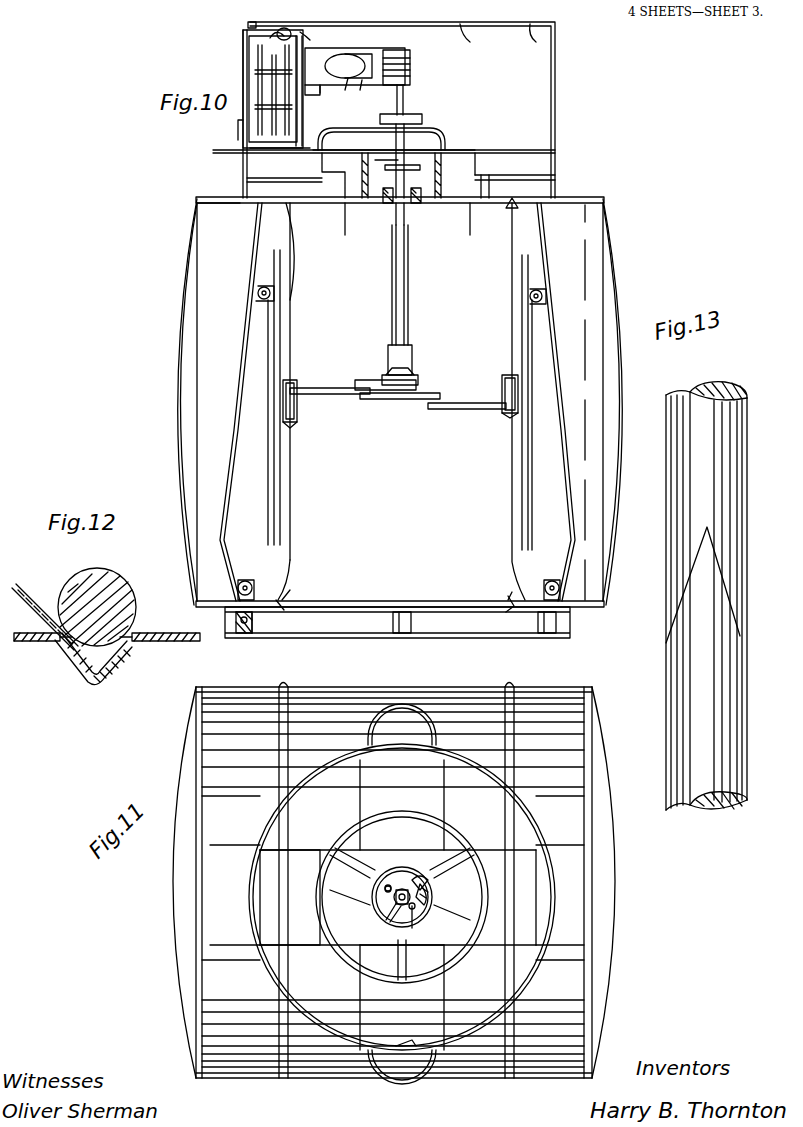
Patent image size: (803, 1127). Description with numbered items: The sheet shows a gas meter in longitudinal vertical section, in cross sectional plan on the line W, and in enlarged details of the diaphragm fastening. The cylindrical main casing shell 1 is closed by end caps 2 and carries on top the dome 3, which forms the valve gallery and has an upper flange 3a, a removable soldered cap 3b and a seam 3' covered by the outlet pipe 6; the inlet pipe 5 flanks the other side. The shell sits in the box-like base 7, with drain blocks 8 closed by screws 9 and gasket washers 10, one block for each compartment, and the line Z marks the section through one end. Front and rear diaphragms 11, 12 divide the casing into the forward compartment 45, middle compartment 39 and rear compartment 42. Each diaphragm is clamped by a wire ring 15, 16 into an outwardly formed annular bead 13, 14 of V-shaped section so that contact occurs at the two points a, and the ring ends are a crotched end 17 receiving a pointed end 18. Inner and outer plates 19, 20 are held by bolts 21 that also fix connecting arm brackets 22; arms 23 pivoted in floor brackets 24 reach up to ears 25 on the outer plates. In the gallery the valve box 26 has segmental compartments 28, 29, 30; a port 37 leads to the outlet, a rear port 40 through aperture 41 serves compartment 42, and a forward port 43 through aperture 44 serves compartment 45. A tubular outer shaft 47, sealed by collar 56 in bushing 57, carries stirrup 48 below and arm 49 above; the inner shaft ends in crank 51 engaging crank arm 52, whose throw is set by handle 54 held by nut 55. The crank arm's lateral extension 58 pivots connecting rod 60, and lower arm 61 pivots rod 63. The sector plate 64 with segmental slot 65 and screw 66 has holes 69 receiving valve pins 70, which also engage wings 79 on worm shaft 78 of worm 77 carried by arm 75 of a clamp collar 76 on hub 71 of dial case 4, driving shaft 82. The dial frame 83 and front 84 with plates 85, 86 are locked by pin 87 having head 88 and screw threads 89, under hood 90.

In FIG. 10, the cylindrical main casing shell 1 is at (215, 198).
In FIG. 11, the cylindrical main casing shell 1 is at (540, 716).
In FIG. 10, the end caps 2 is at (176, 404).
In FIG. 11, the end caps 2 is at (185, 788).
In FIG. 10, the dome 3 is at (413, 110).
In FIG. 11, the dome 3 is at (402, 897).
In FIG. 10, the upper flange of the dome 3a is at (538, 42).
In FIG. 10, the cap 3b is at (470, 40).
In FIG. 11, the seam of the dome 3' is at (430, 1025).
In FIG. 10, the dial case 4 is at (325, 66).
In FIG. 11, the inlet pipe 5 is at (408, 704).
In FIG. 11, the outlet pipe 6 is at (406, 1086).
In FIG. 10, the base 7 is at (262, 639).
In FIG. 10, the drain blocks 8 is at (256, 620).
In FIG. 10, the screws 9 is at (242, 624).
In FIG. 10, the gasket washers 10 is at (236, 620).
In FIG. 10, the front diaphragm 11 is at (291, 518).
In FIG. 12, the front diaphragm 11 is at (36, 602).
In FIG. 10, the rear diaphragm 12 is at (512, 478).
In FIG. 10, the annular bead 13 is at (284, 610).
In FIG. 11, the annular bead 13 is at (292, 684).
In FIG. 12, the annular bead 13 is at (110, 672).
In FIG. 10, the annular bead 14 is at (508, 610).
In FIG. 11, the annular bead 14 is at (510, 684).
In FIG. 10, the wire ring 15 is at (286, 592).
In FIG. 12, the wire ring 15 is at (122, 606).
In FIG. 10, the wire ring 16 is at (514, 592).
In FIG. 13, the crotched end of the ring 17 is at (714, 524).
In FIG. 13, the pointed end of the ring 18 is at (720, 655).
In FIG. 10, the inner plate 19 is at (284, 340).
In FIG. 10, the outer plate 20 is at (270, 352).
In FIG. 10, the bolts 21 is at (282, 398).
In FIG. 10, the connecting arm brackets 22 is at (296, 426).
In FIG. 10, the arms 23 is at (234, 450).
In FIG. 10, the brackets 24 is at (246, 580).
In FIG. 10, the ears 25 is at (262, 286).
In FIG. 10, the valve box 26 is at (486, 153).
In FIG. 11, the valve box 26 is at (402, 830).
In FIG. 11, the segmental compartment 28 is at (386, 838).
In FIG. 10, the segmental compartment 29 is at (456, 204).
In FIG. 11, the segmental compartment 29 is at (452, 911).
In FIG. 10, the segmental compartment 30 is at (350, 203).
In FIG. 11, the segmental compartment 30 is at (350, 913).
In FIG. 11, the port 37 is at (372, 1000).
In FIG. 10, the middle compartment 39 is at (416, 285).
In FIG. 10, the rear port 40 is at (506, 178).
In FIG. 11, the rear port 40 is at (540, 876).
In FIG. 10, the aperture 41 is at (520, 206).
In FIG. 10, the rear compartment 42 is at (570, 225).
In FIG. 10, the forward port 43 is at (275, 176).
In FIG. 11, the forward port 43 is at (290, 897).
In FIG. 10, the aperture 44 is at (262, 203).
In FIG. 10, the forward compartment 45 is at (253, 251).
In FIG. 10, the tubular outer shaft 47 is at (409, 330).
In FIG. 10, the stirrup 48 is at (412, 356).
In FIG. 10, the arm 49 is at (414, 161).
In FIG. 10, the crank 51 is at (418, 378).
In FIG. 10, the crank arm 52 is at (390, 372).
In FIG. 10, the handle 54 is at (383, 172).
In FIG. 11, the handle 54 is at (386, 916).
In FIG. 11, the nut 55 is at (386, 900).
In FIG. 10, the collar 56 is at (395, 208).
In FIG. 10, the bushing 57 is at (412, 203).
In FIG. 10, the lateral extension 58 is at (364, 380).
In FIG. 10, the connecting rod 60 is at (330, 397).
In FIG. 10, the lower arm 61 is at (384, 400).
In FIG. 10, the connecting rod 63 is at (458, 410).
In FIG. 10, the sector plate 64 is at (421, 167).
In FIG. 11, the sector plate 64 is at (404, 868).
In FIG. 11, the segmental slot 65 is at (424, 886).
In FIG. 11, the screw 66 is at (416, 880).
In FIG. 11, the holes 69 is at (388, 886).
In FIG. 10, the pins 70 is at (395, 138).
In FIG. 10, the hub 71 is at (326, 98).
In FIG. 10, the arm 75 is at (366, 95).
In FIG. 10, the clamp collar 76 is at (352, 66).
In FIG. 10, the worm 77 is at (410, 66).
In FIG. 10, the worm shaft 78 is at (404, 98).
In FIG. 10, the wings 79 is at (380, 118).
In FIG. 10, the shaft 82 is at (346, 94).
In FIG. 10, the dial frame 83 is at (282, 52).
In FIG. 10, the front 84 is at (248, 146).
In FIG. 10, the upper plate 85 is at (276, 36).
In FIG. 10, the lower plate 86 is at (276, 152).
In FIG. 10, the pin 87 is at (304, 50).
In FIG. 10, the head 88 is at (300, 32).
In FIG. 10, the screw threads 89 is at (284, 30).
In FIG. 10, the hood 90 is at (248, 26).
In FIG. 10, the section line w—w W is at (580, 153).
In FIG. 10, the section line z—z Z is at (582, 408).
In FIG. 12, the points of contact a is at (64, 644).